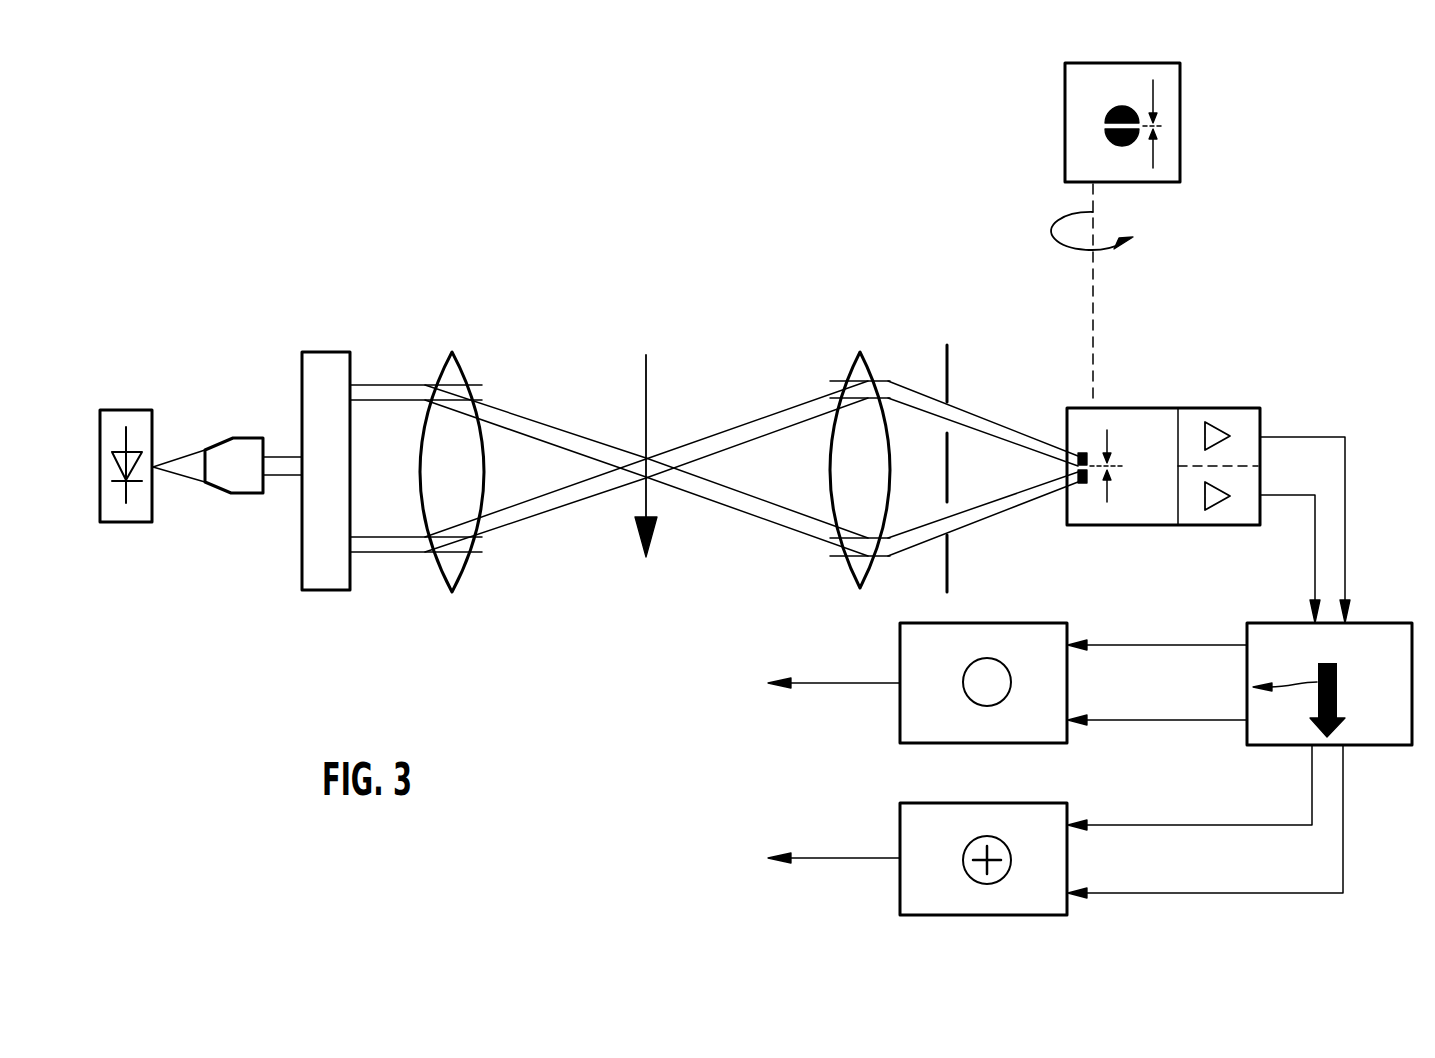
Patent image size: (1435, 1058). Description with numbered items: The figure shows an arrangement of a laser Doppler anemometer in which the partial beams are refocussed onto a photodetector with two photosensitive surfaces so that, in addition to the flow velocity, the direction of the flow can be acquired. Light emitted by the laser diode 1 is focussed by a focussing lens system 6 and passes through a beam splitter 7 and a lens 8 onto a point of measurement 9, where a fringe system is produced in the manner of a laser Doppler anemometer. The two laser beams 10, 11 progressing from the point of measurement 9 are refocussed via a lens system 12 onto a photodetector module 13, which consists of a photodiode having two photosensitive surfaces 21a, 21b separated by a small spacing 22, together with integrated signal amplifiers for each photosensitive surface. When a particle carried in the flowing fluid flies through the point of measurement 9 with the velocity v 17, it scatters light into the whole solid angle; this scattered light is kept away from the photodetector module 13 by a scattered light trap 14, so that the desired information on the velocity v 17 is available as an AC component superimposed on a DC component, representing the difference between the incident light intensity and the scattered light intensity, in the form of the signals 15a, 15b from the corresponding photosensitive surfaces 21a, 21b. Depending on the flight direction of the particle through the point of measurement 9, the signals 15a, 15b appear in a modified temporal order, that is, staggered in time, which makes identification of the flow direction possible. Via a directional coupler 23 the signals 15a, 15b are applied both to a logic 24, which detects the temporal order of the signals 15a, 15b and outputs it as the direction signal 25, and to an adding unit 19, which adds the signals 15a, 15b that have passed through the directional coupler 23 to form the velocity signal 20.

The laser diode 1 is at (125, 412).
The focussing lens system 6 is at (240, 438).
The beam splitter 7 is at (325, 360).
The lens 8 is at (455, 356).
The point of measurement 9 is at (650, 447).
The laser beam 10 is at (564, 425).
The laser beam 11 is at (566, 510).
The lens system 12 is at (858, 352).
The photodetector module 13 is at (1230, 410).
The scattered light trap 14 is at (945, 582).
The signal 15a is at (1303, 437).
The signal 15b is at (1310, 535).
The velocity v 17 is at (647, 507).
The adding unit 19 is at (900, 827).
The velocity signal 20 is at (807, 857).
The photosensitive surface 21a is at (1078, 448).
The photosensitive surface 21b is at (1078, 488).
The spacing 22 is at (1122, 467).
The directional coupler 23 is at (1258, 738).
The logic 24 is at (900, 703).
The direction signal 25 is at (800, 685).